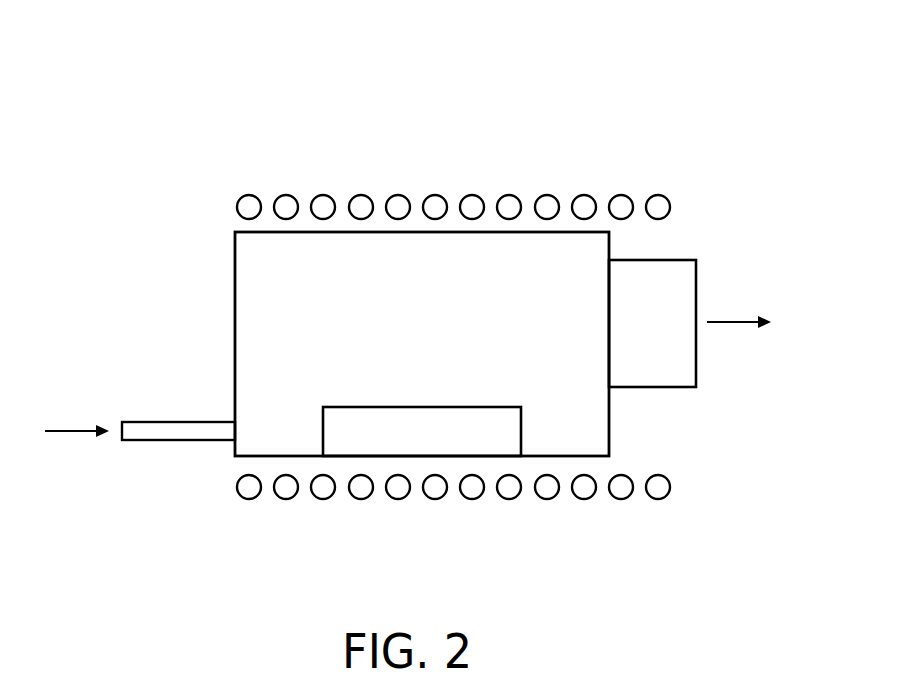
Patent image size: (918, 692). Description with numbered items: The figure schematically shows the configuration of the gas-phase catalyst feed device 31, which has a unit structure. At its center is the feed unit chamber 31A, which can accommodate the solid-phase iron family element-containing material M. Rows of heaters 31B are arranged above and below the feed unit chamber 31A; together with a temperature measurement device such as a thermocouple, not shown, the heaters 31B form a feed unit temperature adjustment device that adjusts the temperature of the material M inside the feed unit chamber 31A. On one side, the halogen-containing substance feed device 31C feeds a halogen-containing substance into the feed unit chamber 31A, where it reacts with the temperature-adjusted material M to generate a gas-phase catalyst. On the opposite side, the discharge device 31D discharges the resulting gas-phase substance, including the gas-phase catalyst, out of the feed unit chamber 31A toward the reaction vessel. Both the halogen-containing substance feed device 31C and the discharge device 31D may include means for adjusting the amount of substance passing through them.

The gas-phase catalyst feed device 31 is at (177, 124).
The feed unit chamber 31A is at (243, 277).
The heater 31B is at (400, 207).
The halogen-containing substance feed device 31C is at (175, 433).
The discharge device 31D is at (658, 277).